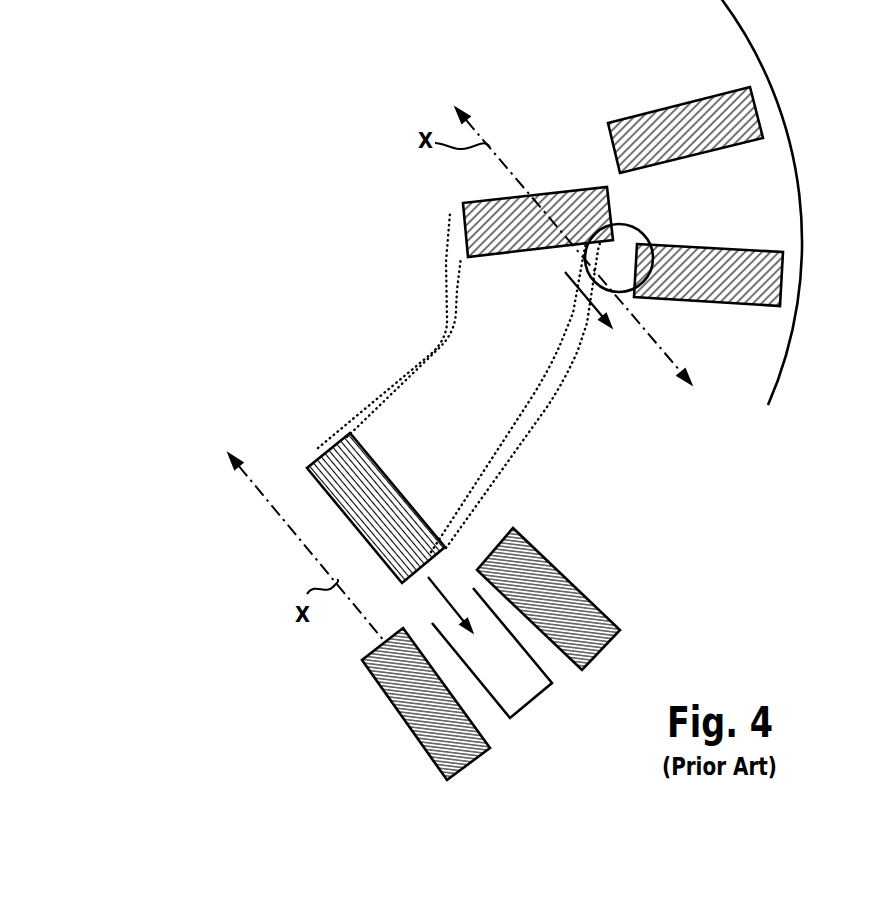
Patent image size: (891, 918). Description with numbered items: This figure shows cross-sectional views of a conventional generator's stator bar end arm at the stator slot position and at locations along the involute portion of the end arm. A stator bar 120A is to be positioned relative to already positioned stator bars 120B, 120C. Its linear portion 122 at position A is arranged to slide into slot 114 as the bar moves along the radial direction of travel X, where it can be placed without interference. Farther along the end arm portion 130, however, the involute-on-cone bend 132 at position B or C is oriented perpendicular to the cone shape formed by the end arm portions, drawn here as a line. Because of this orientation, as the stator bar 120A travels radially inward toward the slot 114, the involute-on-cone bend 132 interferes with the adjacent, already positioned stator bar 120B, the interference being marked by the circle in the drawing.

The slot 114 is at (802, 292).
The stator bar 120A is at (299, 319).
The stator bar 120B is at (723, 295).
The stator bar 120C is at (675, 123).
The linear portion 122 is at (323, 458).
The end arm portion 130 is at (422, 343).
The involute-on-cone bend 132 is at (478, 223).